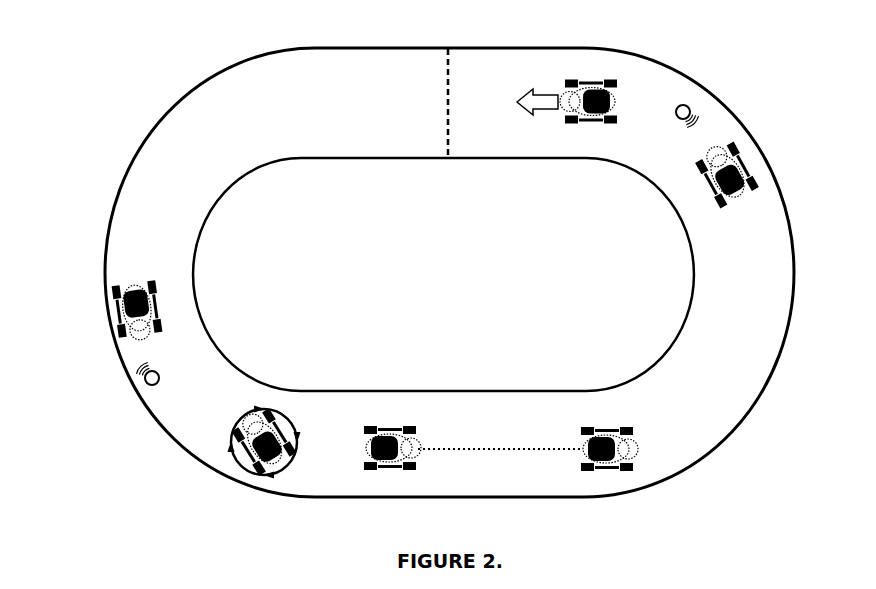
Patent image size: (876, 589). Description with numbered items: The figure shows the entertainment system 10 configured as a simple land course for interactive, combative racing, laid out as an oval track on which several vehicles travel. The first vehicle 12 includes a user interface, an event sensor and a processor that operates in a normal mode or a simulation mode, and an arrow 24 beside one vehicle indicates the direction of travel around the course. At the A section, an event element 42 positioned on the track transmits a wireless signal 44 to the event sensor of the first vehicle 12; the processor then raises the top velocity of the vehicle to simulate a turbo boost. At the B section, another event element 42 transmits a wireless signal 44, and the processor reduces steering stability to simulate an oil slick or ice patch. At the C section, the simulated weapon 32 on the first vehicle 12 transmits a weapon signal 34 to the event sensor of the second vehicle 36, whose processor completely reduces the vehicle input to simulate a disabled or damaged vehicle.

The entertainment system 10 is at (148, 100).
The first vehicle 12 is at (596, 122).
The direction of travel arrow 24 is at (541, 121).
The simulated weapon 32 is at (365, 463).
The weapon signal 34 is at (507, 441).
The second vehicle 36 is at (646, 450).
The event element 42 is at (694, 98).
The wireless signal 44 is at (707, 117).